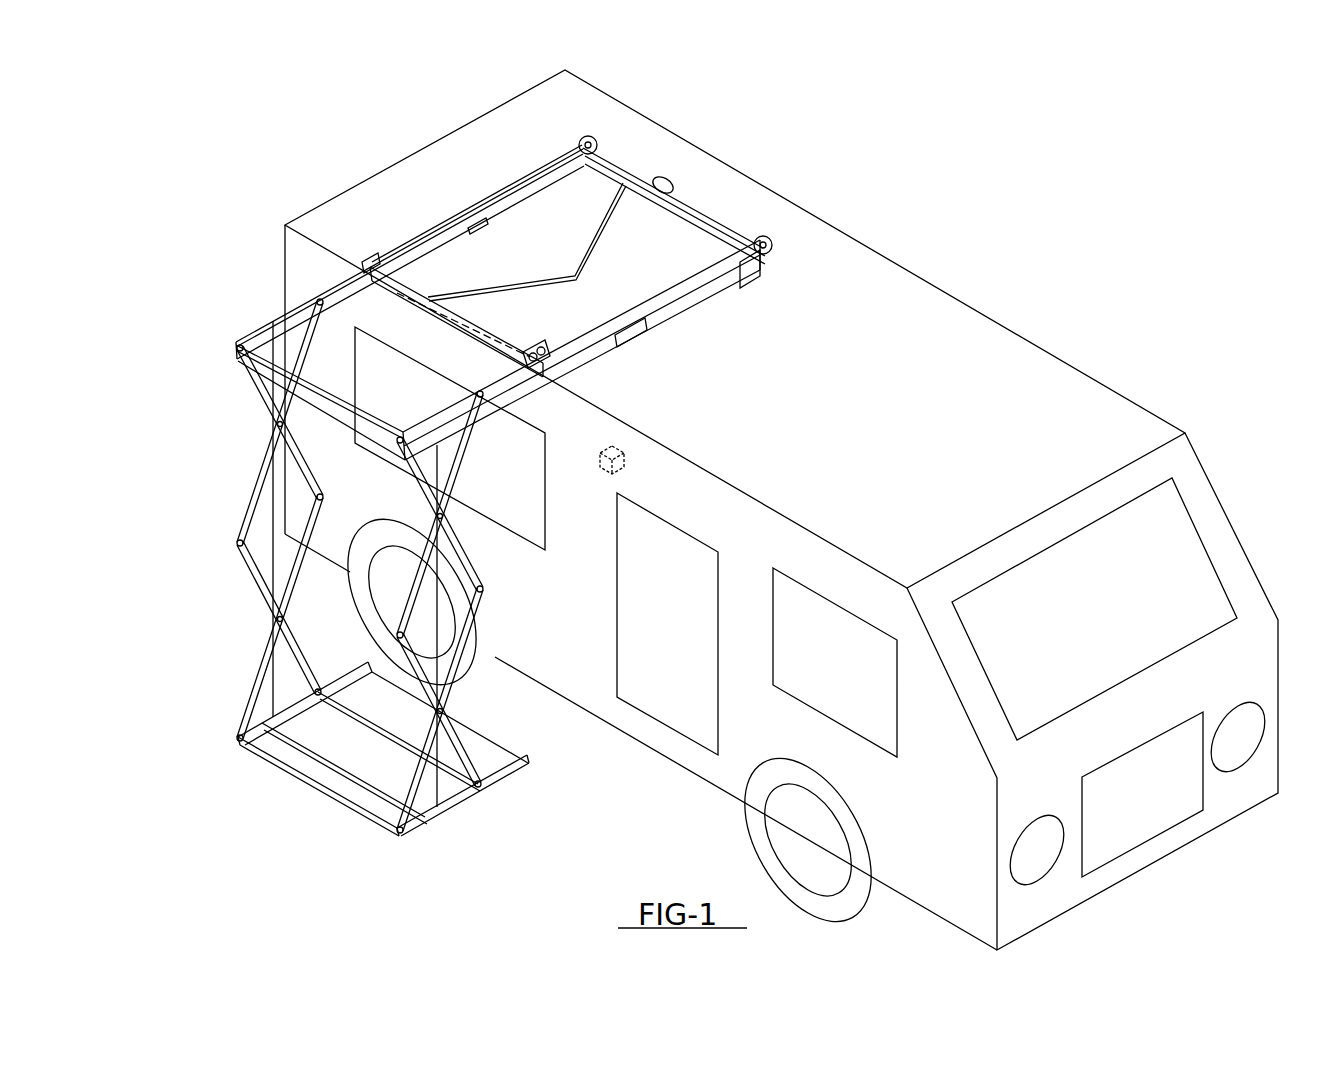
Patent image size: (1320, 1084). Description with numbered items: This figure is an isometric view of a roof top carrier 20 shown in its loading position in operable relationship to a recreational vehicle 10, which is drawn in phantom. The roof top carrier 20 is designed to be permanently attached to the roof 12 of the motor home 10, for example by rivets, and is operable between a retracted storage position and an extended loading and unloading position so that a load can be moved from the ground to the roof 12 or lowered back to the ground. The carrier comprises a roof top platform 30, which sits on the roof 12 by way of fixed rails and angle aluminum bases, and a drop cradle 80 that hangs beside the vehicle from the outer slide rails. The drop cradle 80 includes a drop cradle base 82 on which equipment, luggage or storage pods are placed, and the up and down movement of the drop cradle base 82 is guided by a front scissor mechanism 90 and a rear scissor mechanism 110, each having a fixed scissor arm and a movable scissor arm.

The recreational vehicle 10 is at (1262, 322).
The roof 12 is at (845, 418).
The roof top carrier 20 is at (196, 416).
The roof top platform 30 is at (680, 350).
The drop cradle 80 is at (198, 634).
The drop cradle base 82 is at (274, 807).
The front scissor mechanism 90 is at (588, 603).
The rear scissor mechanism 110 is at (225, 527).